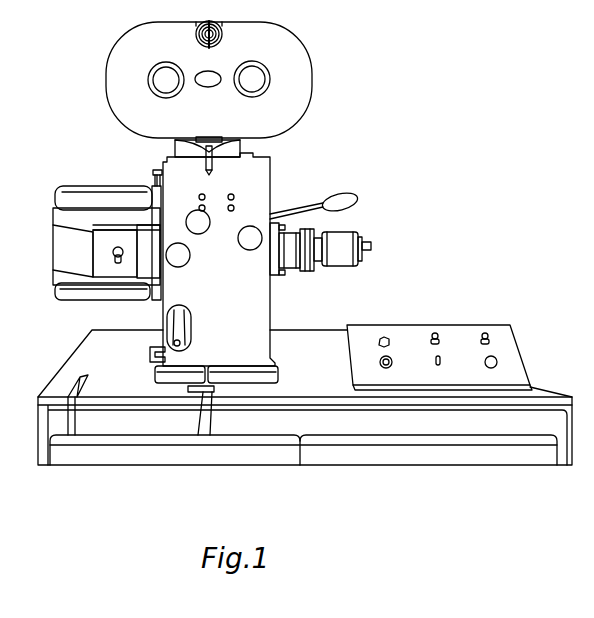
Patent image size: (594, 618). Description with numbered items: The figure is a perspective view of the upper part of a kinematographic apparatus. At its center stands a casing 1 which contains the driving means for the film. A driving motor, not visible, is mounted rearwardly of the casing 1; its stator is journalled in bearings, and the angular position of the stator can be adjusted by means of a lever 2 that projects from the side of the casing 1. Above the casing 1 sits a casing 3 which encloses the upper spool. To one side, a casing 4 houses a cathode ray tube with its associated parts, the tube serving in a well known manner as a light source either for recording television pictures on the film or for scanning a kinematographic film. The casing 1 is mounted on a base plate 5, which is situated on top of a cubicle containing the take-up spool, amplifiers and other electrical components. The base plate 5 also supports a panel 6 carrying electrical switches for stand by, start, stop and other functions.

The casing 1 is at (265, 192).
The lever 2 is at (350, 202).
The casing 3 is at (298, 70).
The casing 4 is at (62, 198).
The base plate 5 is at (67, 367).
The panel 6 is at (508, 347).